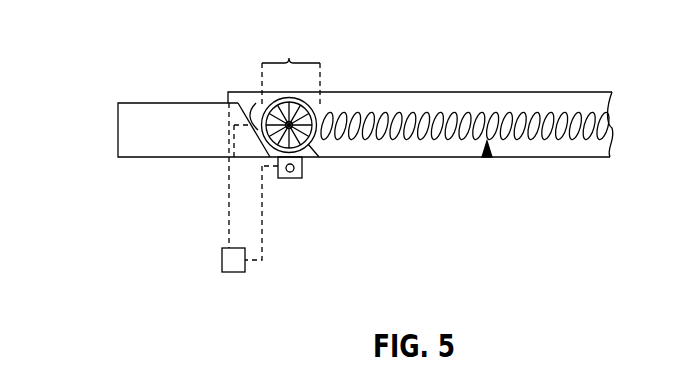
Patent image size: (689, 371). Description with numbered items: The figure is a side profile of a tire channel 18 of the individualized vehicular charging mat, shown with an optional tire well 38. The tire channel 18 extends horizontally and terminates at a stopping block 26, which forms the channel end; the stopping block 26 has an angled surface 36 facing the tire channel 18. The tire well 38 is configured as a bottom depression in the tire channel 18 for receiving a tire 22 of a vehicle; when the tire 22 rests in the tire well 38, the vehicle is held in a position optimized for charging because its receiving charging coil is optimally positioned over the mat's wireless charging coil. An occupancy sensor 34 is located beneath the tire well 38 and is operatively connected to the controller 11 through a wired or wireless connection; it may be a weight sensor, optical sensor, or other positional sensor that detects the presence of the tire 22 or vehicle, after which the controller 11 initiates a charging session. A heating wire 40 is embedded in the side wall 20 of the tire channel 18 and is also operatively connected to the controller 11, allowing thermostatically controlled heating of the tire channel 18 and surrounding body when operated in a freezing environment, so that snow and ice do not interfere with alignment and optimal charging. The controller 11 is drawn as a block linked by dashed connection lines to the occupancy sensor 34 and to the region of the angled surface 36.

The controller 11 is at (222, 261).
The tire channel 18 is at (487, 157).
The side wall 20 is at (593, 103).
The tire 22 is at (311, 155).
The stopping block 26 is at (137, 123).
The occupancy sensor 34 is at (290, 173).
The angled surface 36 is at (260, 106).
The tire well 38 is at (291, 68).
The heating wire 40 is at (531, 112).